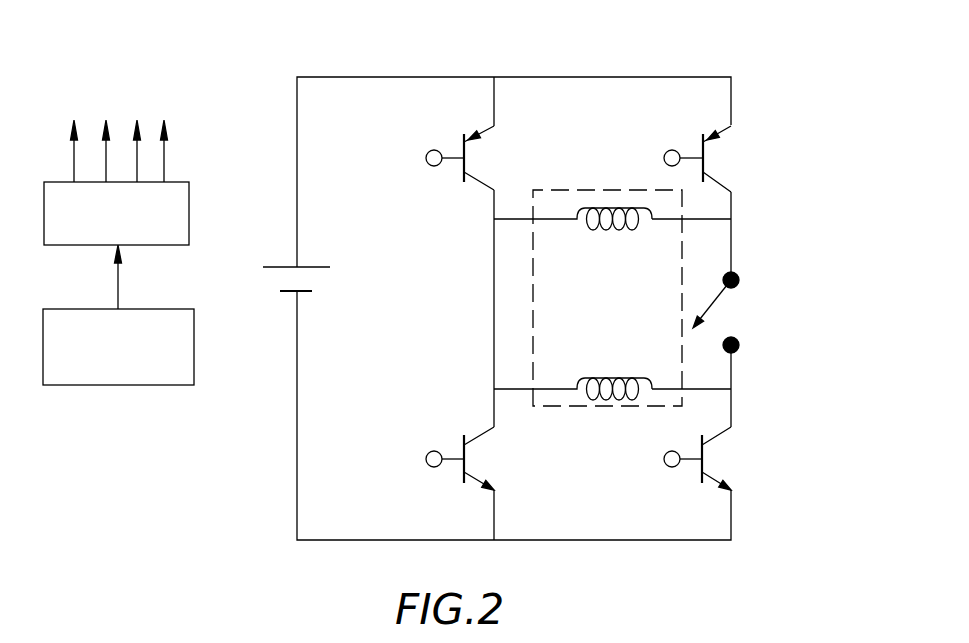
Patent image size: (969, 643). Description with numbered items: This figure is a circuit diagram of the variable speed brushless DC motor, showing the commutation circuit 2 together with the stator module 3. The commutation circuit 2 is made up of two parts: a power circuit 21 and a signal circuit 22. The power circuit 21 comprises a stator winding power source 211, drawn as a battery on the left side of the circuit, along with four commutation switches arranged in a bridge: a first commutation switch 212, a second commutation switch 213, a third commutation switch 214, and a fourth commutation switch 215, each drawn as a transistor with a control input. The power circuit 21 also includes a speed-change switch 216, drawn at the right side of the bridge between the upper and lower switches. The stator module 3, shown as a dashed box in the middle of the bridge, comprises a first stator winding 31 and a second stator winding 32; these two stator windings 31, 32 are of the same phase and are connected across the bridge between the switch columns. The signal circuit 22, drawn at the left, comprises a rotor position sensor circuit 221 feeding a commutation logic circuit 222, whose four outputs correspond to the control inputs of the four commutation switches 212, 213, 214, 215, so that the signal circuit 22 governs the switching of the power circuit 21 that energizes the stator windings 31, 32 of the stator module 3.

The commutation circuit 2 is at (215, 478).
The power circuit 21 is at (798, 127).
The signal circuit 22 is at (194, 122).
The rotor position sensor circuit 221 is at (188, 347).
The commutation logic circuit 222 is at (186, 214).
The stator winding power source 211 is at (330, 280).
The first commutation switch 212 is at (425, 151).
The second commutation switch 213 is at (665, 151).
The third commutation switch 214 is at (428, 452).
The fourth commutation switch 215 is at (666, 453).
The speed-change switch 216 is at (742, 280).
The stator module 3 is at (592, 190).
The first stator winding 31 is at (608, 227).
The second stator winding 32 is at (602, 376).